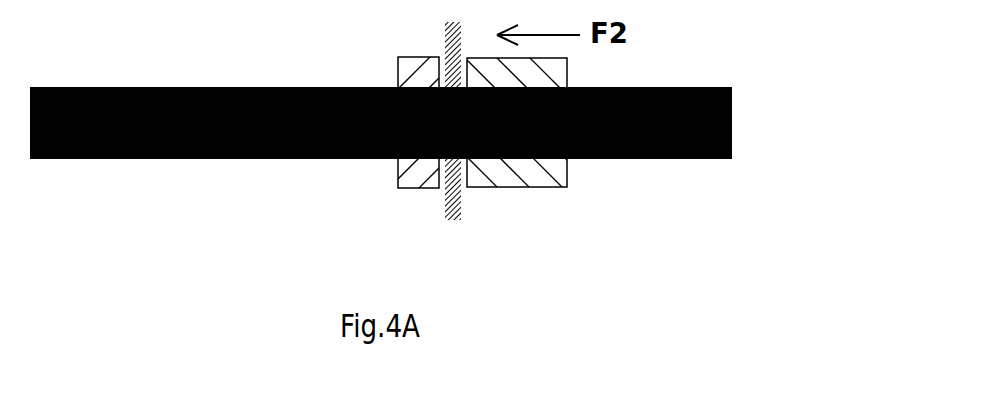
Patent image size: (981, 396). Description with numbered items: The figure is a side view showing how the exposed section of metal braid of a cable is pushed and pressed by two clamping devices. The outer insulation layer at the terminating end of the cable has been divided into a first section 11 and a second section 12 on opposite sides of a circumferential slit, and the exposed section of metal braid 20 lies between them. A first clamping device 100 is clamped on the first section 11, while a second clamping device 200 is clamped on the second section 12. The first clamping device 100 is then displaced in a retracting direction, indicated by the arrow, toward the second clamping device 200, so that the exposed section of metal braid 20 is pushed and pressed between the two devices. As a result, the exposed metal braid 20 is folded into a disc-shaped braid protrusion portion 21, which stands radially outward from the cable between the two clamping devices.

The first section 11 is at (642, 159).
The second section 12 is at (220, 159).
The metal braid 20 is at (455, 217).
The braid protrusion portion 21 is at (453, 121).
The first clamping device 100 is at (553, 187).
The second clamping device 200 is at (405, 190).